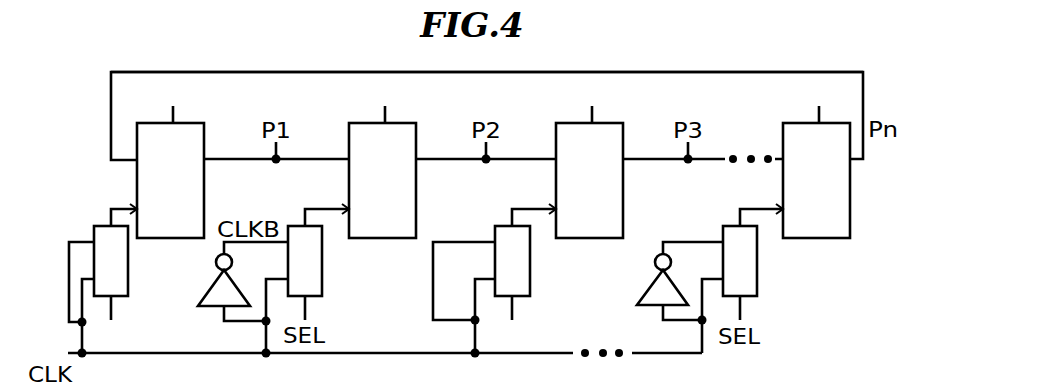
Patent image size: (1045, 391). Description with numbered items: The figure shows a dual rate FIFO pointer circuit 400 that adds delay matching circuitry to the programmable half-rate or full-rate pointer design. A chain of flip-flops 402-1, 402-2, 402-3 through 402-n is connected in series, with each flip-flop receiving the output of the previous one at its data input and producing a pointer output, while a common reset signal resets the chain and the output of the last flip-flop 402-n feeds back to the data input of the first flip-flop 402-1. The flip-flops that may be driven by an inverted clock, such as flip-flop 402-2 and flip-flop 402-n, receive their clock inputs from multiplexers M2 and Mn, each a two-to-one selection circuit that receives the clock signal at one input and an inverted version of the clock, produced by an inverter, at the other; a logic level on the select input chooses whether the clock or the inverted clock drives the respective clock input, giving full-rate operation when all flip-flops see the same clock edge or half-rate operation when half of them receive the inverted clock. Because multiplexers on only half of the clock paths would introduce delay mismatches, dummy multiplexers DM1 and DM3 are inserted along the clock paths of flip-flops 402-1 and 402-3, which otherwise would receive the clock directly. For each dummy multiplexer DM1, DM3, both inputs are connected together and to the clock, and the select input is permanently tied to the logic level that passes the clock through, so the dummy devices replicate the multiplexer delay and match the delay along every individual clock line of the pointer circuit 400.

The pointer circuit 400 is at (770, 63).
The flip-flop 402-1 is at (204, 124).
The flip-flop 402-2 is at (416, 124).
The flip-flop 402-3 is at (623, 124).
The flip-flop 402-n is at (783, 187).
The dummy multiplexer DM1 is at (128, 270).
The multiplexer M2 is at (322, 270).
The dummy multiplexer DM3 is at (530, 270).
The multiplexer Mn is at (757, 270).